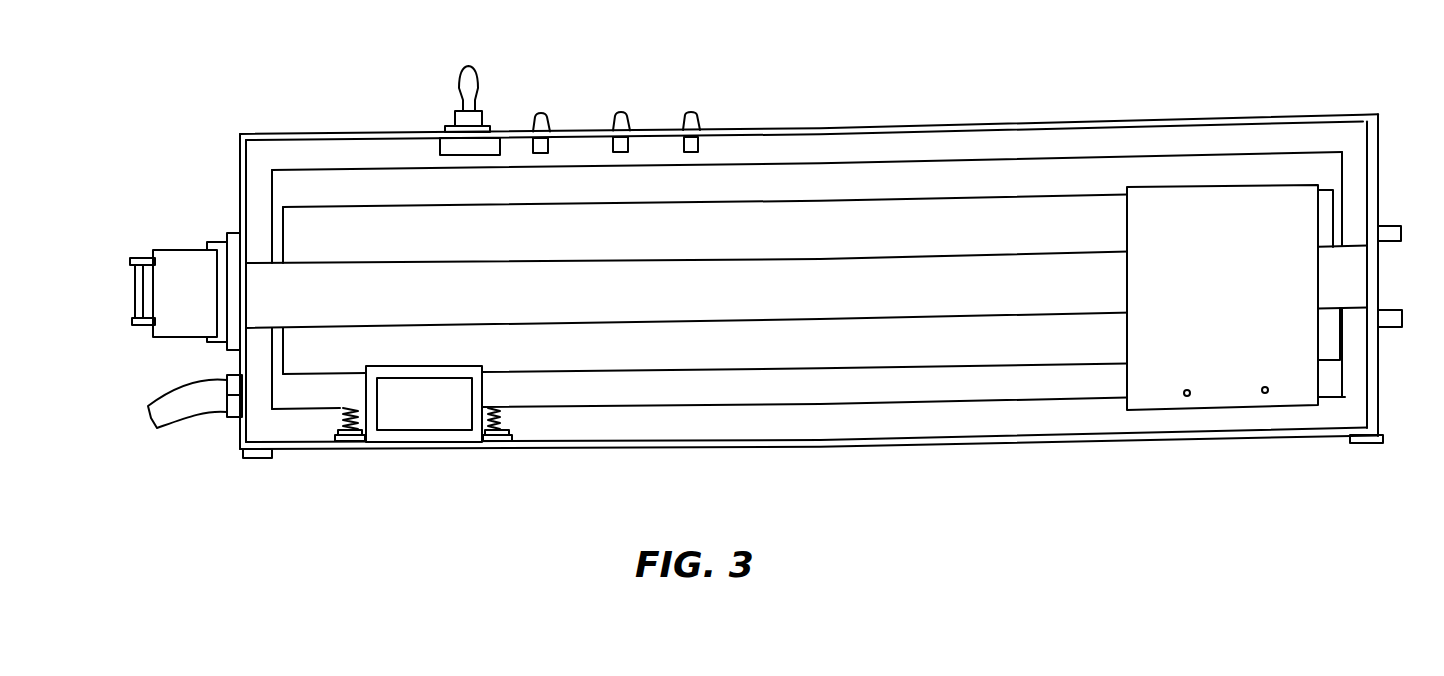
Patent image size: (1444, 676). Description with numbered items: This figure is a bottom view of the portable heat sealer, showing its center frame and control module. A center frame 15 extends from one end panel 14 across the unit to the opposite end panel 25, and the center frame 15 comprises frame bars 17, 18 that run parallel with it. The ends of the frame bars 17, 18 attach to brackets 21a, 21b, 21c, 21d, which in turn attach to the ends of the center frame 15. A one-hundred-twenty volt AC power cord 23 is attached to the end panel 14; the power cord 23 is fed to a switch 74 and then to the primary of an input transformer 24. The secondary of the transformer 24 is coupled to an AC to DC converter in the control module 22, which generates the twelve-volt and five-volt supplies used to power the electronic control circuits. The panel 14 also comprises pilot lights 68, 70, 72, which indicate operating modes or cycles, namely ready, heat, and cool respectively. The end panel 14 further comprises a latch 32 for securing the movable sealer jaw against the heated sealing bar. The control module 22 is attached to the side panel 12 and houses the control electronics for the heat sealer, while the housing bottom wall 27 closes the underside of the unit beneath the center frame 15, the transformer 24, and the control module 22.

The side panel 12 is at (854, 128).
The end panel 14 is at (238, 170).
The center frame 15 is at (841, 303).
The frame bar 17 is at (786, 196).
The frame bar 18 is at (896, 399).
The bracket 21a is at (273, 223).
The bracket 21b is at (273, 357).
The bracket 21c is at (1345, 342).
The bracket 21d is at (1342, 202).
The control module 22 is at (1236, 314).
The power cord 23 is at (192, 416).
The input transformer 24 is at (418, 415).
The end panel 25 is at (1378, 148).
The housing bottom wall 27 is at (857, 449).
The latch 32 is at (165, 292).
The pilot light 68 is at (543, 113).
The pilot light 70 is at (620, 112).
The pilot light 72 is at (690, 112).
The switch 74 is at (468, 64).